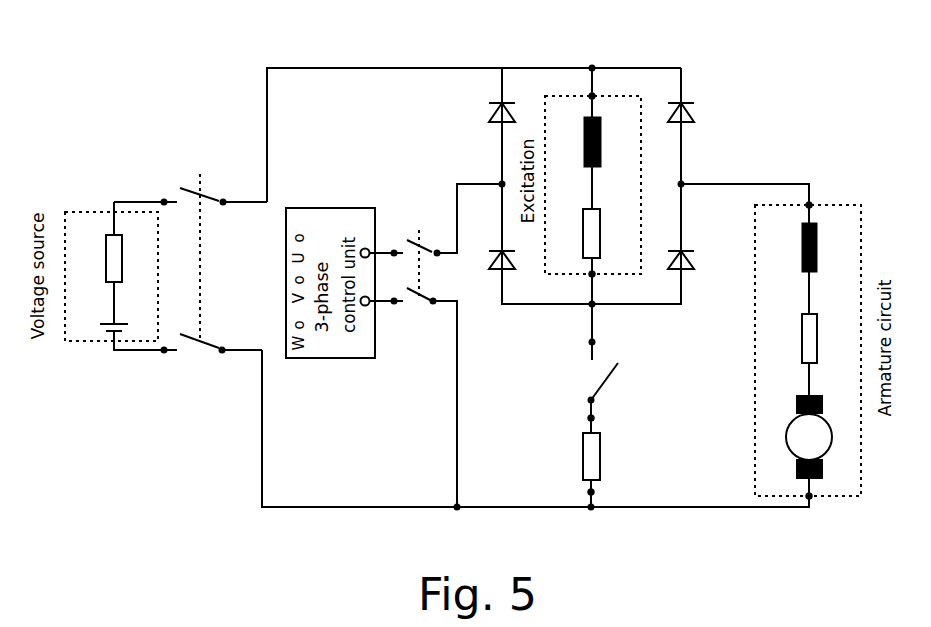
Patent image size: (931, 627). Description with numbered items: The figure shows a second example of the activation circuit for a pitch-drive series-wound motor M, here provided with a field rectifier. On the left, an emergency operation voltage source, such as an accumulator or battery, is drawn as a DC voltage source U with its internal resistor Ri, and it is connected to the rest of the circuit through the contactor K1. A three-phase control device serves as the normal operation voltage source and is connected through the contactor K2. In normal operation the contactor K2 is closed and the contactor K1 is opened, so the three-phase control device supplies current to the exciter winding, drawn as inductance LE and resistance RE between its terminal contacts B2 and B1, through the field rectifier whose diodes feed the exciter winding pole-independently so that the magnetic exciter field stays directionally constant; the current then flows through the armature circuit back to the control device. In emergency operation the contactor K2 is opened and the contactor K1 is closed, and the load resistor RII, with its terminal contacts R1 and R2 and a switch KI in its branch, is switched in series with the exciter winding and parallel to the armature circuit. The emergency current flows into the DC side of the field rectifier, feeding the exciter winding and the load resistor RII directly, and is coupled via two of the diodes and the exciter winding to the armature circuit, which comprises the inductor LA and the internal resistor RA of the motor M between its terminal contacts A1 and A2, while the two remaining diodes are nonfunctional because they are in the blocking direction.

The internal resistor Ri is at (127, 263).
The DC voltage source U is at (127, 321).
The contactor K1 is at (223, 248).
The contactor K2 is at (423, 250).
The resistor switch KI is at (618, 380).
The excitation winding inductance LE is at (608, 142).
The excitation winding resistance RE is at (607, 235).
The load resistor RII is at (574, 456).
The inductor LA is at (826, 247).
The internal resistor RA is at (827, 333).
The series-wound motor M is at (809, 437).
The excitation terminal B1 is at (592, 274).
The excitation terminal B2 is at (592, 96).
The first terminal contact of the armature circuit A1 is at (809, 205).
The second terminal contact of the armature winding A2 is at (809, 496).
The first terminal contact of the load resistor R1 is at (591, 418).
The second terminal contact of the load resistor R2 is at (591, 492).